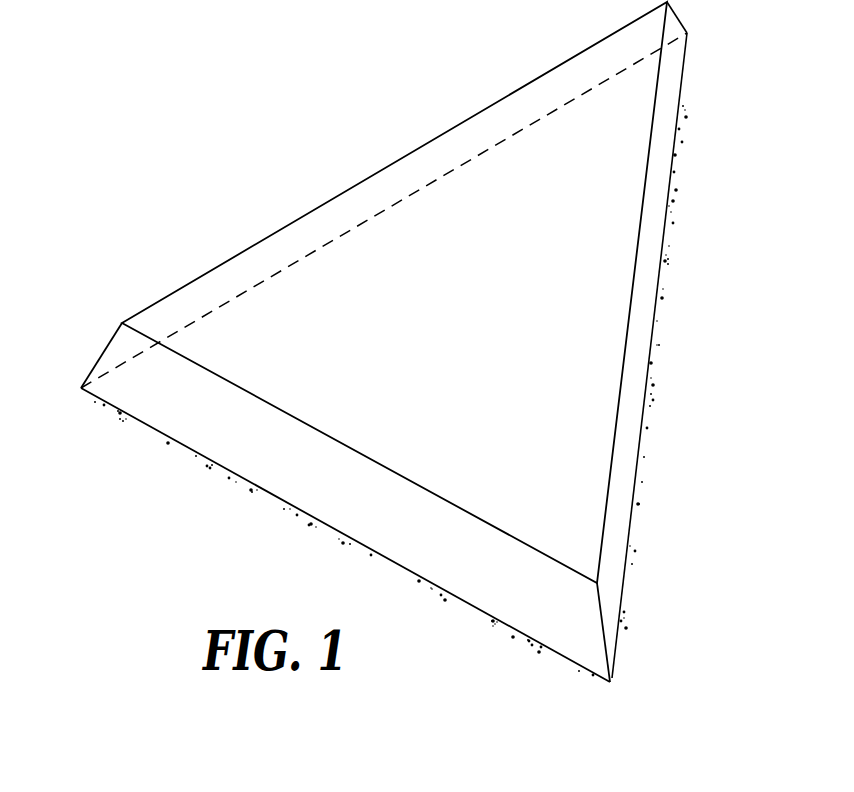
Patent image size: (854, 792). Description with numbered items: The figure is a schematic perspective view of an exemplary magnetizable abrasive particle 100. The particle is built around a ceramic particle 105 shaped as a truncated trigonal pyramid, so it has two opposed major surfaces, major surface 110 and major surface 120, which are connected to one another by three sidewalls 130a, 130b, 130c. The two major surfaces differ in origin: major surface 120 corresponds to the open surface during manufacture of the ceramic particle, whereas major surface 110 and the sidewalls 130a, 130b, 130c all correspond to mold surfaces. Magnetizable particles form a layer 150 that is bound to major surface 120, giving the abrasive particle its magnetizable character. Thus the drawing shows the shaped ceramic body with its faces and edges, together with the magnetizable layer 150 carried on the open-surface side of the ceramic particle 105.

The magnetizable abrasive particle 100 is at (232, 104).
The ceramic particle 105 is at (424, 124).
The major surface 110 is at (218, 287).
The major surface 120 is at (470, 608).
The sidewall 130a is at (660, 295).
The sidewall 130b is at (104, 352).
The sidewall 130c is at (152, 433).
The layer 150 is at (624, 672).